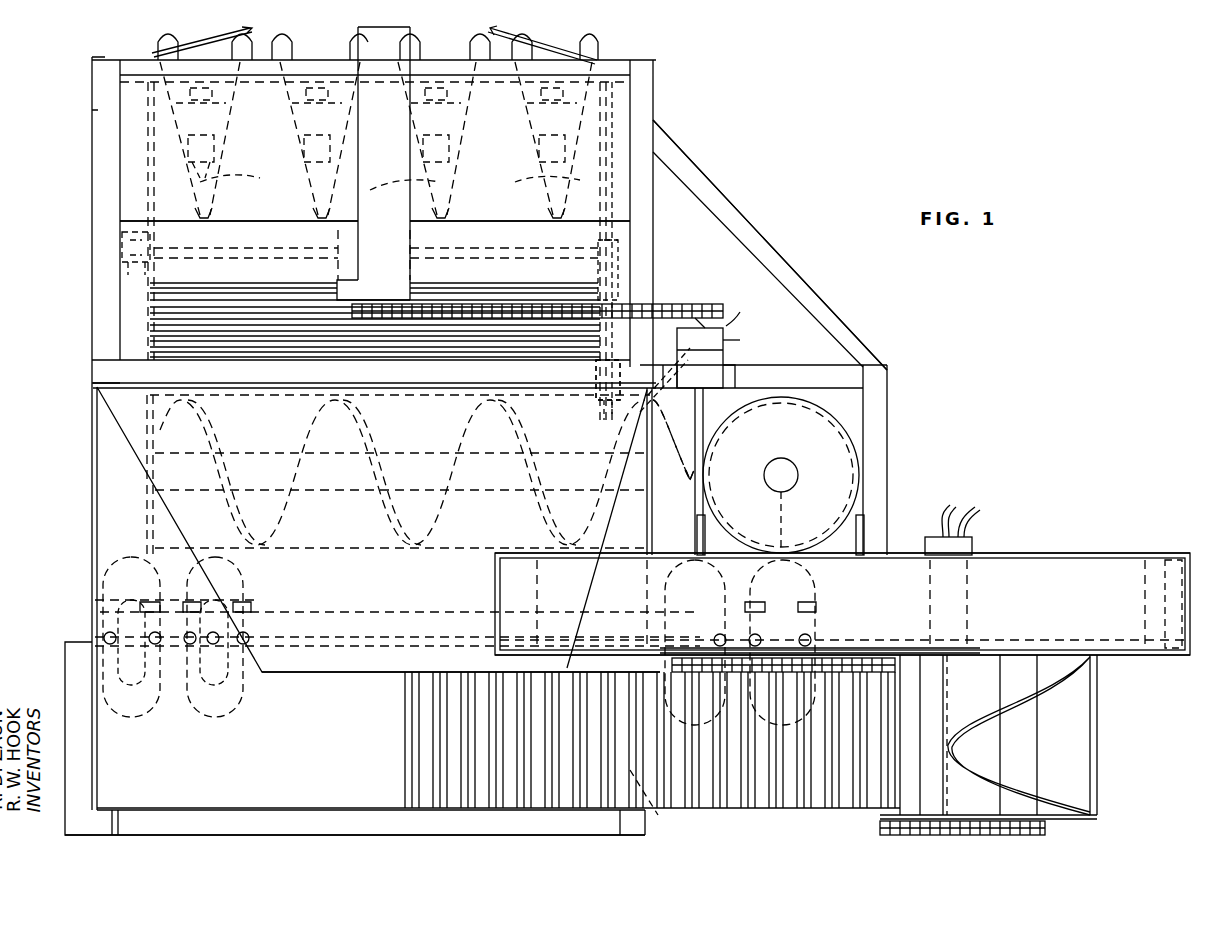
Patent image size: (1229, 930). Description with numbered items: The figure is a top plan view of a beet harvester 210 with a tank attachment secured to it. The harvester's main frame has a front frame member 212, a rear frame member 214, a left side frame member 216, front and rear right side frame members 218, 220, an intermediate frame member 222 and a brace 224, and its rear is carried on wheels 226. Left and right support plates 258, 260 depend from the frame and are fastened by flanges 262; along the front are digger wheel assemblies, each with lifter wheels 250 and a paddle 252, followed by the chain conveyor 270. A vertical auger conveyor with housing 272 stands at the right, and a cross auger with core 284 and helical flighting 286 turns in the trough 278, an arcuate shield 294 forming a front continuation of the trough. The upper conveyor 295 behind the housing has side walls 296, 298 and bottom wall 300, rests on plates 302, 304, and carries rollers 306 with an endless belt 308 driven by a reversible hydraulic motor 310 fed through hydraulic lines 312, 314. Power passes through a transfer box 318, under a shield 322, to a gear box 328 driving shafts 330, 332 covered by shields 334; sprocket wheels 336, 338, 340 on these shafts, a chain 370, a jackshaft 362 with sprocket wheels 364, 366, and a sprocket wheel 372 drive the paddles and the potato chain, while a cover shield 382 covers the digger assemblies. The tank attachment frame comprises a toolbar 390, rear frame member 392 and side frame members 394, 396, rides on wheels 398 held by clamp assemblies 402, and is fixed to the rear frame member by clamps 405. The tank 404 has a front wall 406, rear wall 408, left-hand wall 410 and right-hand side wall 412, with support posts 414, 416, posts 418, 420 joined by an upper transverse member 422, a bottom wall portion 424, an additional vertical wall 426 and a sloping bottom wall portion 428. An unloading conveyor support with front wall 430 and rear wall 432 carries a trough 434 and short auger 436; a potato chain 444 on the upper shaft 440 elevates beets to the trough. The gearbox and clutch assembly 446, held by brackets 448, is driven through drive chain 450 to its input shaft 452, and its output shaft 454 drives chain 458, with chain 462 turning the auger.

The beet harvester 210 is at (839, 266).
The front frame member 212 is at (500, 85).
The rear frame member 214 is at (360, 612).
The left side frame member 216 is at (98, 125).
The front right side frame member 218 is at (656, 170).
The rear right side frame member 220 is at (880, 412).
The intermediate frame member 222 is at (793, 372).
The brace 224 is at (755, 228).
The wheels 226 is at (238, 700).
The lifter wheels 250 is at (225, 58).
The paddle 252 is at (290, 180).
The left side support plate 258 is at (150, 157).
The right side support plate 260 is at (612, 208).
The flange 262 is at (620, 268).
The chain conveyor 270 is at (150, 305).
The vertical housing 272 is at (858, 448).
The trough 278 is at (348, 548).
The core 284 is at (484, 482).
The helical flighting 286 is at (340, 445).
The arcuate shield 294 is at (730, 415).
The upper conveyor 295 is at (1044, 535).
The side wall 296 is at (1112, 556).
The side wall 298 is at (1140, 660).
The bottom wall 300 is at (1195, 566).
The plate 302 is at (715, 512).
The plate 304 is at (870, 490).
The rollers 306 is at (770, 556).
The endless belt 308 is at (1020, 623).
The reversible hydraulic motor 310 is at (972, 545).
The hydraulic line 312 is at (946, 530).
The hydraulic line 314 is at (970, 508).
The transfer box 318 is at (345, 285).
The shield 322 is at (372, 190).
The gear box 328 is at (400, 236).
The shaft 330 is at (245, 250).
The shaft 332 is at (540, 250).
The shields 334 is at (222, 222).
The sprocket wheel 336 is at (615, 245).
The sprocket wheel 338 is at (125, 230).
The sprocket wheel 340 is at (125, 245).
The jackshaft 362 is at (598, 373).
The sprocket wheel 364 is at (592, 385).
The sprocket wheel 366 is at (681, 369).
The chain 370 is at (615, 295).
The sprocket wheel 372 is at (620, 418).
The cover shield 382 is at (232, 166).
The toolbar 390 is at (368, 665).
The rear frame member 392 is at (372, 835).
The side frame member 394 is at (70, 690).
The side frame member 396 is at (660, 815).
The wheels 398 is at (145, 712).
The releasable clamp assemblies 402 is at (135, 653).
The tank 404 is at (70, 494).
The releasable clamps 405 is at (195, 585).
The front wall 406 is at (312, 385).
The rear wall 408 is at (264, 806).
The left-hand wall 410 is at (97, 552).
The right-hand side wall 412 is at (648, 518).
The support post 414 is at (112, 835).
The support post 416 is at (628, 830).
The post 418 is at (92, 368).
The post 420 is at (700, 356).
The upper transverse member 422 is at (430, 392).
The bottom wall portion 424 is at (394, 588).
The additional vertical wall 426 is at (159, 768).
The sloping bottom wall portion 428 is at (612, 546).
The front wall 430 is at (920, 675).
The rear wall 432 is at (760, 810).
The trough 434 is at (1098, 724).
The short auger 436 is at (1025, 718).
The upper shaft 440 is at (845, 815).
The potato chain 444 is at (440, 745).
The combined reduction gearbox and electric clutch assembly 446 is at (725, 340).
The brackets 448 is at (730, 377).
The drive chain 450 is at (665, 308).
The input shaft 452 is at (728, 328).
The output shaft 454 is at (700, 436).
The chain 458 is at (890, 655).
The chain 462 is at (945, 836).